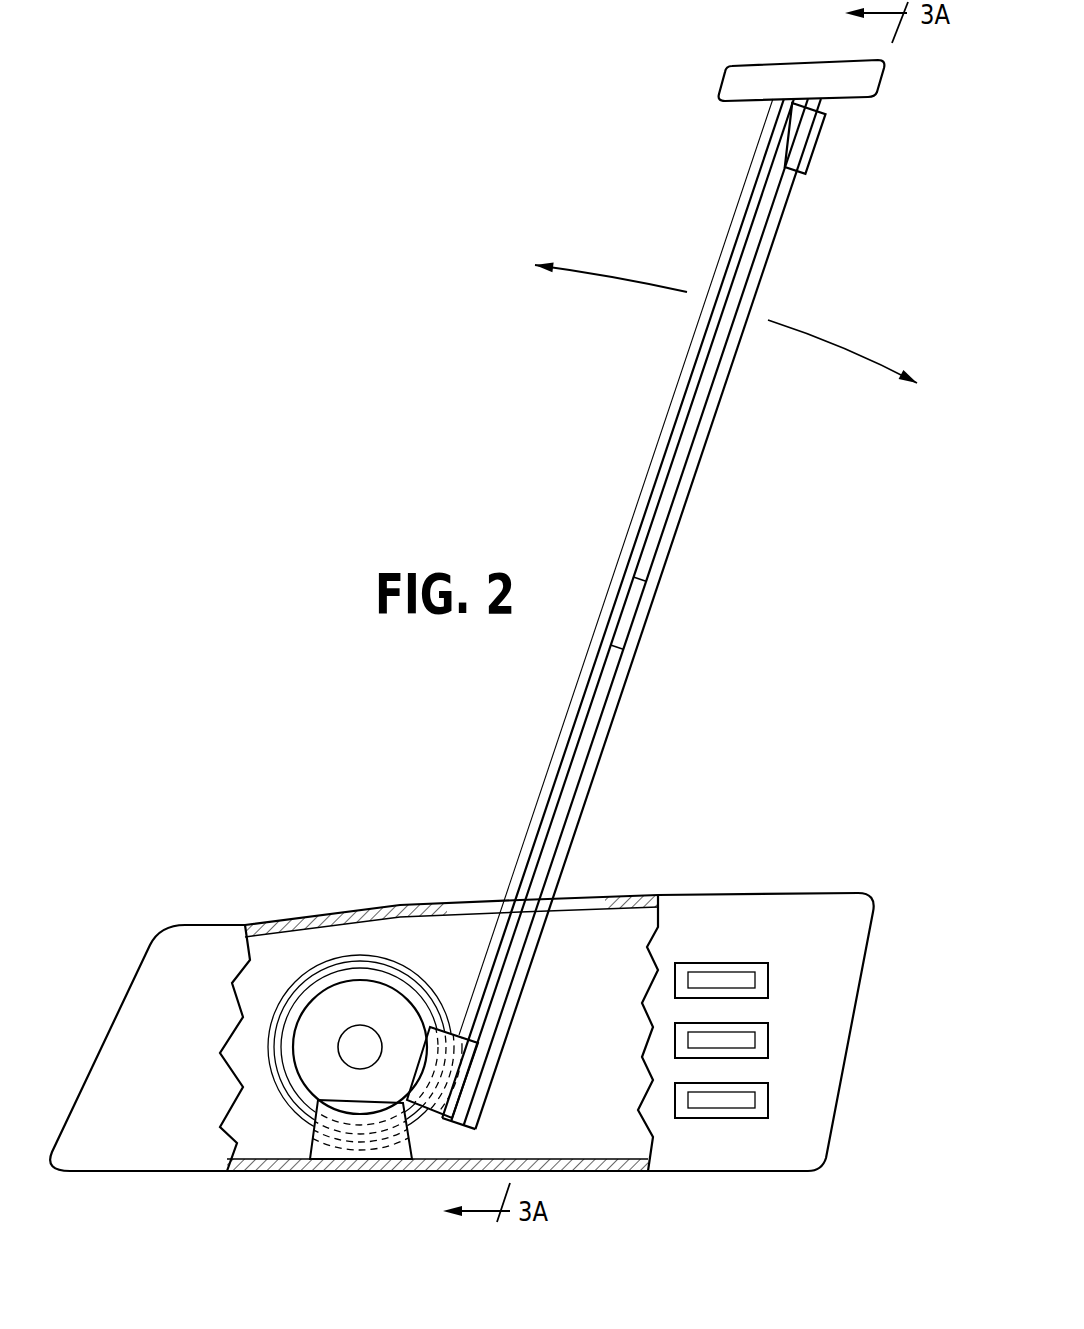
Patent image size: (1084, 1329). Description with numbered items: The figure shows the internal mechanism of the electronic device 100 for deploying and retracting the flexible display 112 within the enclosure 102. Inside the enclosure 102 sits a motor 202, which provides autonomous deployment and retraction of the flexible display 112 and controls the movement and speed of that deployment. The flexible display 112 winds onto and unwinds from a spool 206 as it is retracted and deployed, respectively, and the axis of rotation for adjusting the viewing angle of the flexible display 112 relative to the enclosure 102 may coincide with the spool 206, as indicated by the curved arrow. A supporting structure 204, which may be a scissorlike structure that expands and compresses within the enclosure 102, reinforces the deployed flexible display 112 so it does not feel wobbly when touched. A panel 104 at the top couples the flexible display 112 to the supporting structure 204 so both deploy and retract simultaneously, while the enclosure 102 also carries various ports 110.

The electronic device 100 is at (360, 132).
The enclosure 102 is at (211, 923).
The panel 104 is at (805, 63).
The ports 110 is at (736, 963).
The flexible display 112 is at (659, 436).
The motor 202 is at (403, 1010).
The supporting structure 204 is at (690, 489).
The spool 206 is at (353, 1040).